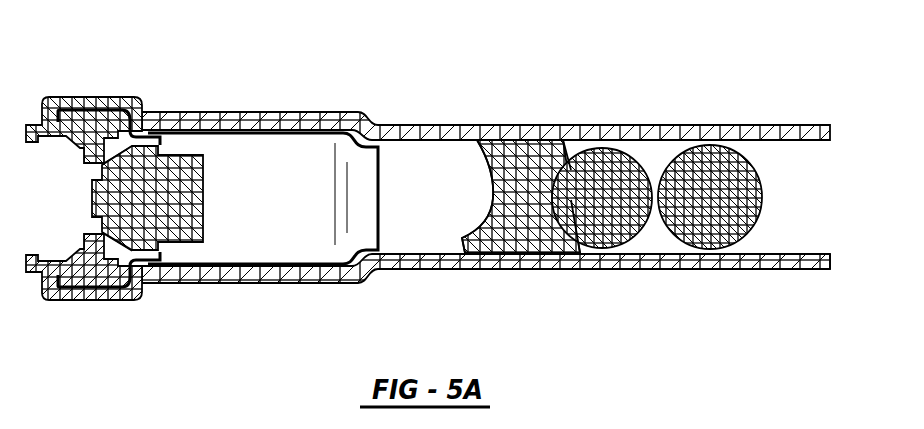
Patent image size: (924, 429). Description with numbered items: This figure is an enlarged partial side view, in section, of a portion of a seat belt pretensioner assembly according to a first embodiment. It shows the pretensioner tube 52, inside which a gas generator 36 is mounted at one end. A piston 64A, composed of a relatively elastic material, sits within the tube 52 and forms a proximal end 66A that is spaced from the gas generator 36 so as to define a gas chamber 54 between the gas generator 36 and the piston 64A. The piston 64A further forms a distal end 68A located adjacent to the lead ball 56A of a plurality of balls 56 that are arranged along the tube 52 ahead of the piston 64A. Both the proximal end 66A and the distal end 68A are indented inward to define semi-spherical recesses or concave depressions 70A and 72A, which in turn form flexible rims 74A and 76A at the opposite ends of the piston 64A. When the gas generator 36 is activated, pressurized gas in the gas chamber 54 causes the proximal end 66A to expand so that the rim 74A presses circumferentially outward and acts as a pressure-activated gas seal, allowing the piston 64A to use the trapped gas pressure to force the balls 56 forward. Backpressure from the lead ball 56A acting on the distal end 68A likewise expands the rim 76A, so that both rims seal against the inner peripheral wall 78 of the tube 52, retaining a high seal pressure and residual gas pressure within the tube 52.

The gas generator 36 is at (277, 215).
The pretensioner tube 52 is at (422, 125).
The gas chamber 54 is at (440, 208).
The balls 56 is at (752, 158).
The lead ball 56A is at (641, 152).
The piston 64A is at (532, 211).
The proximal end 66A is at (482, 140).
The distal end 68A is at (575, 158).
The concave depression 70A is at (493, 197).
The concave depression 72A is at (583, 153).
The rim 74A is at (479, 240).
The rim 76A is at (576, 245).
The inner peripheral wall 78 is at (773, 253).